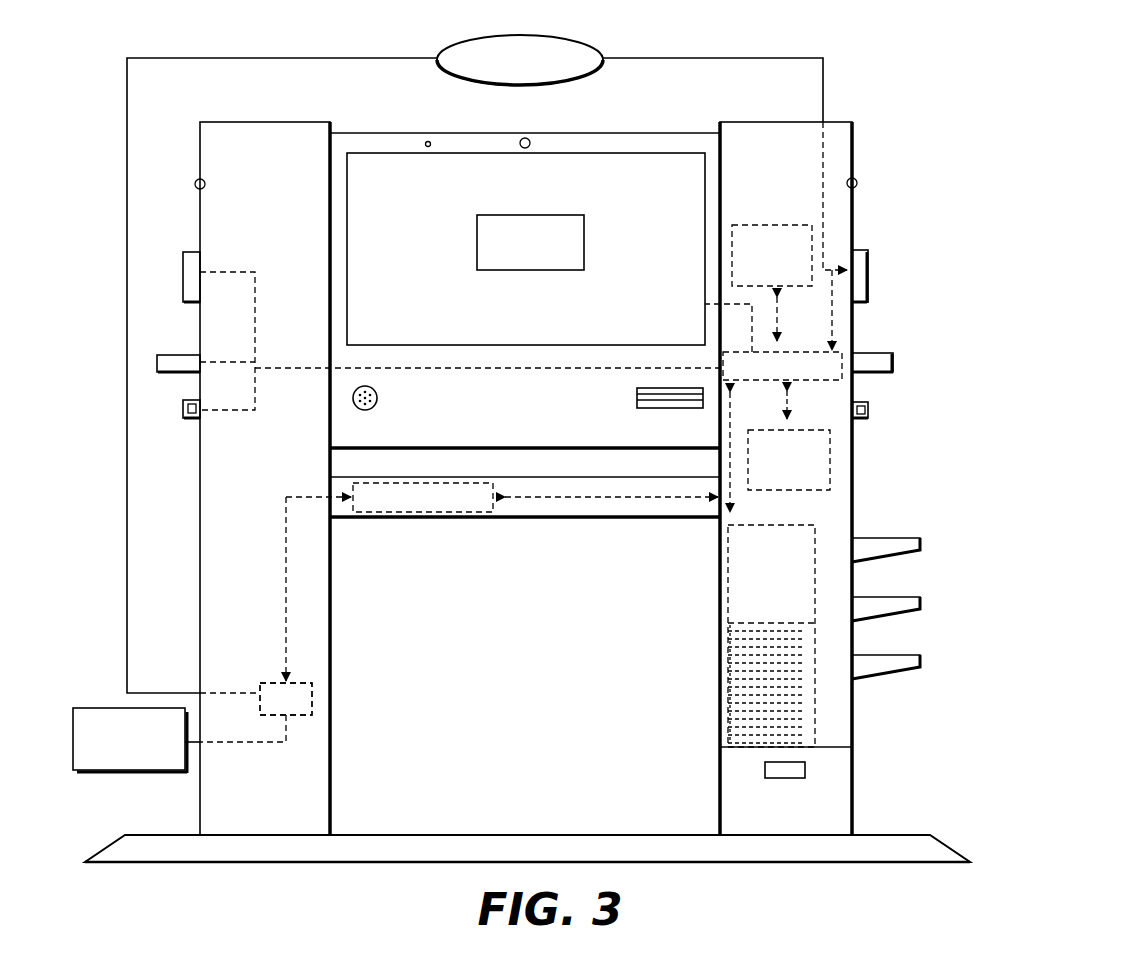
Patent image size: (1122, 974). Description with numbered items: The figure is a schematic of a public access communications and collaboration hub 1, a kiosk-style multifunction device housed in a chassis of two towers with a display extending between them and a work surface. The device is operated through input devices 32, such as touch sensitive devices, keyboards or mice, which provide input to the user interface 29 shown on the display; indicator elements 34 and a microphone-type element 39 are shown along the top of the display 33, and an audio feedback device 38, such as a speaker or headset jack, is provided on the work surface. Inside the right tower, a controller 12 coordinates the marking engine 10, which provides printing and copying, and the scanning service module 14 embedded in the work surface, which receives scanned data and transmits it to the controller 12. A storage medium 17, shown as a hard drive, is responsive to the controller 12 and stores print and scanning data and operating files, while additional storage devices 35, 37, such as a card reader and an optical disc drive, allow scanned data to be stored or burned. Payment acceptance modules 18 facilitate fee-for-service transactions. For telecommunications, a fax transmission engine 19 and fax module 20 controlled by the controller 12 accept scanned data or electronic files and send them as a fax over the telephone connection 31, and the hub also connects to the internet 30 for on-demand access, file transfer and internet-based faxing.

The communications and/or collaboration hub 1 is at (395, 42).
The marking engine 10 is at (728, 593).
The controller 12 is at (845, 380).
The scanning service module 14 is at (458, 514).
The storage medium 17 is at (785, 225).
The payment acceptance module 18 is at (185, 412).
The fax transmission engine 19 is at (312, 703).
The fax module 20 is at (286, 699).
The user interface 29 is at (555, 214).
The internet 30 is at (530, 35).
The telephone connection 31 is at (95, 772).
The input devices 32 is at (172, 355).
The display / screen 33 is at (587, 158).
The indicator lights 34 is at (198, 185).
The storage device 35 is at (182, 272).
The storage device 37 is at (830, 466).
The audio feedback device 38 is at (377, 402).
The microphone 39 is at (428, 143).